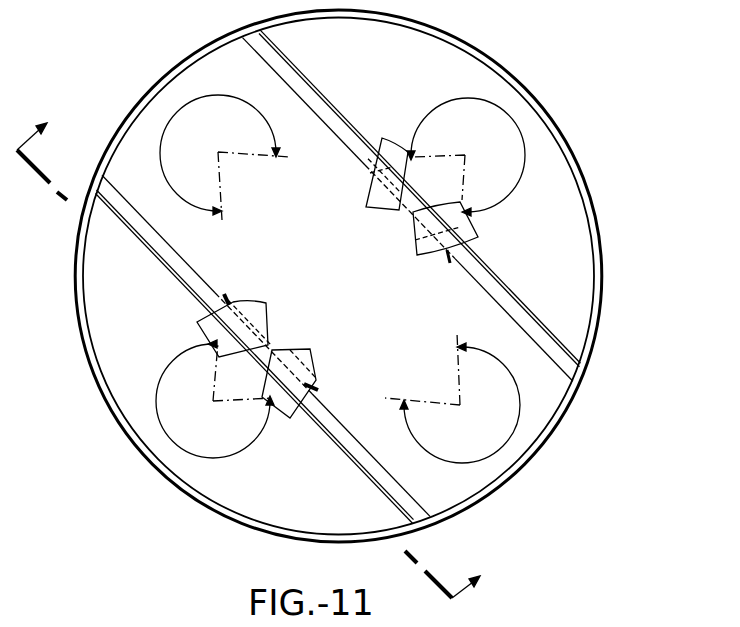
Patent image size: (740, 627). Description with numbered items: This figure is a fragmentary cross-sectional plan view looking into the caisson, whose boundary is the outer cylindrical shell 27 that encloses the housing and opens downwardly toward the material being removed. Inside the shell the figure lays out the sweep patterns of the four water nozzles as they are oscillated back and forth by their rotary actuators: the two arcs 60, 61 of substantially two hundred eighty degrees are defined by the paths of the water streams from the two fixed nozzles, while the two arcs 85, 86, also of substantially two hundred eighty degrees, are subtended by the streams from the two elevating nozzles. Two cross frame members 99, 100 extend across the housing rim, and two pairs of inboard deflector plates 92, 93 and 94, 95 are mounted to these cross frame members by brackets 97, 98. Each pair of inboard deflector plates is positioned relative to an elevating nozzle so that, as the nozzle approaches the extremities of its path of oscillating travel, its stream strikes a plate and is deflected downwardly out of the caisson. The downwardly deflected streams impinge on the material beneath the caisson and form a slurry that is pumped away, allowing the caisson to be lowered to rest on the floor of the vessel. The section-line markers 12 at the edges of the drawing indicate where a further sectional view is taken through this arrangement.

The section line 12- 12 is at (263, 351).
The outer cylindrical shell 27 is at (601, 272).
The 280° arc 60 is at (208, 95).
The 280° arc 61 is at (513, 438).
The 280° arc 85 is at (240, 455).
The 280° arc 86 is at (520, 183).
The inboard deflector plate 92 is at (263, 305).
The inboard deflector plate 93 is at (285, 346).
The inboard deflector plate 94 is at (405, 148).
The inboard deflector plate 95 is at (418, 255).
The bracket 97 is at (227, 297).
The bracket 98 is at (315, 386).
The cross frame member 99 is at (372, 478).
The cross frame member 100 is at (492, 274).